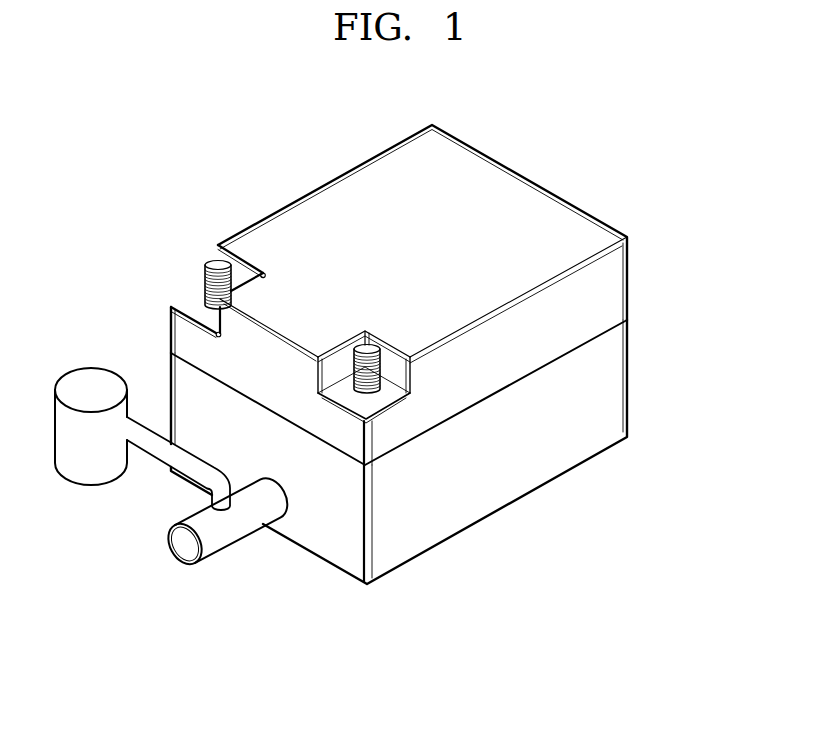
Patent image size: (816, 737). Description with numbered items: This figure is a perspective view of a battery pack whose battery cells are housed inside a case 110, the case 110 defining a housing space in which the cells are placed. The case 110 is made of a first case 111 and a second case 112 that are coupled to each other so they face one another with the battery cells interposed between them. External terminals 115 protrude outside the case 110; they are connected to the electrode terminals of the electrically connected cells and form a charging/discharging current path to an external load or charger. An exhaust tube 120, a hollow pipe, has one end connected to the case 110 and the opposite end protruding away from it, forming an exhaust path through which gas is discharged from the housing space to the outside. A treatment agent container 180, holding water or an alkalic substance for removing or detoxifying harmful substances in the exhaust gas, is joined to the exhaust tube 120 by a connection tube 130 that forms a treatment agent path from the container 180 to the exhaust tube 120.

The case 110 is at (715, 282).
The first case 111 is at (615, 285).
The second case 112 is at (613, 380).
The external terminal 115 is at (215, 267).
The exhaust tube 120 is at (235, 537).
The connection tube 130 is at (155, 450).
The treatment agent container 180 is at (80, 375).